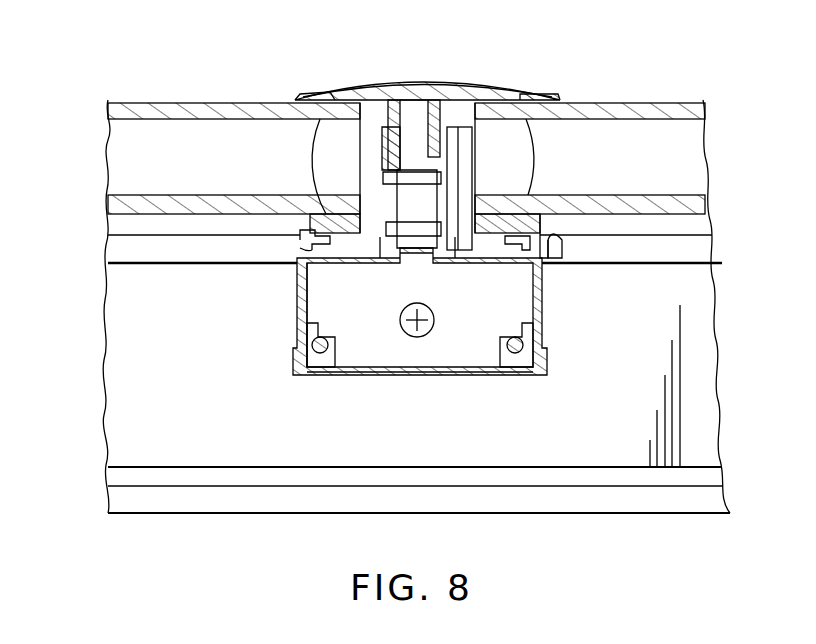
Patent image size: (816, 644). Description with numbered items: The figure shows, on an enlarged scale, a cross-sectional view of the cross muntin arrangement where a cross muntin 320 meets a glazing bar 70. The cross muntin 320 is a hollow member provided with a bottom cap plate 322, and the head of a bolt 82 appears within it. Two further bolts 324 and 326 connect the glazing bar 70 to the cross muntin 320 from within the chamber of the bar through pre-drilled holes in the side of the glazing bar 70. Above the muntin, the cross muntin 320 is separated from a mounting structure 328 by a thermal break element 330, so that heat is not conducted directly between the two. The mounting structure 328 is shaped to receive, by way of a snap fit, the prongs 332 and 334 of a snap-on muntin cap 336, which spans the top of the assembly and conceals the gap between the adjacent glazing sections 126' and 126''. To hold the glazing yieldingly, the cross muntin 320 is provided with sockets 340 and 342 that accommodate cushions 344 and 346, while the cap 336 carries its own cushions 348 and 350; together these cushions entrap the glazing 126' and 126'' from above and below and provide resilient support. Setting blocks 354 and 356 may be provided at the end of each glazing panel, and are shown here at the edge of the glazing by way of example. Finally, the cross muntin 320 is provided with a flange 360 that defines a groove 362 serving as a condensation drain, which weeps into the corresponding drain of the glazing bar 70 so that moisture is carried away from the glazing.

The glazing bar 70 is at (122, 436).
The glazing section 126'' is at (217, 163).
The glazing section 126' is at (598, 163).
The snap-on muntin cap 336 is at (420, 84).
The cushion 348 is at (300, 97).
The cushion 350 is at (560, 97).
The prong 334 is at (392, 100).
The prong 332 is at (435, 105).
The mounting structure 328 is at (382, 150).
The setting block 354 is at (470, 127).
The setting block 356 is at (474, 132).
The thermal break element 330 is at (395, 240).
The socket 340 is at (305, 262).
The cushion 344 is at (300, 236).
The cushion 346 is at (520, 222).
The socket 342 is at (515, 246).
The groove 362 is at (560, 246).
The flange 360 is at (570, 252).
The cross muntin 320 is at (296, 332).
The bottom cap plate 322 is at (318, 305).
The bolt 82 is at (400, 320).
The bolt 326 is at (320, 356).
The bolt 324 is at (517, 356).